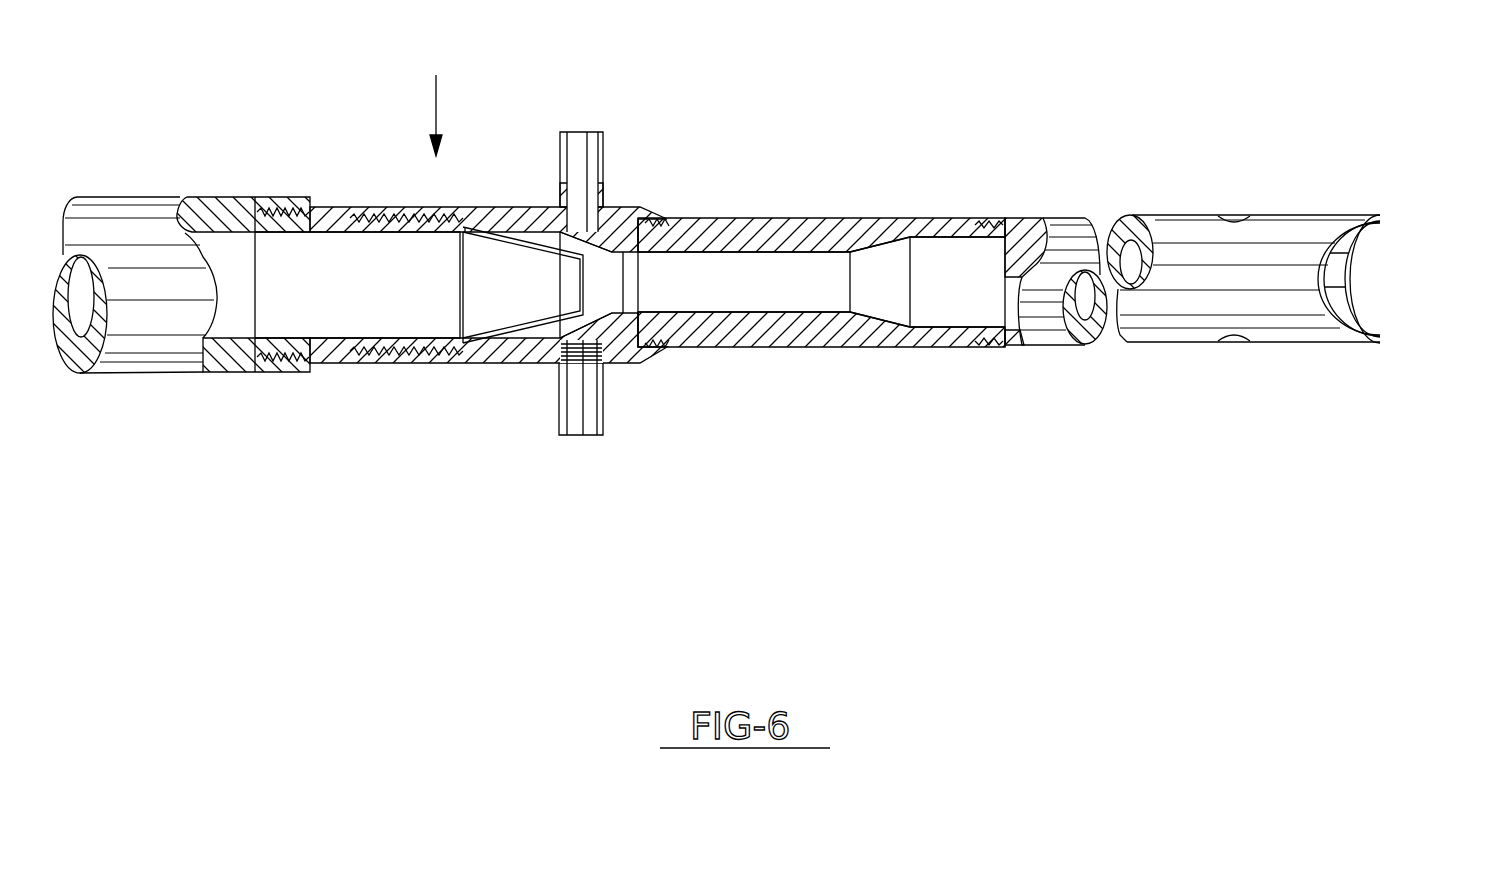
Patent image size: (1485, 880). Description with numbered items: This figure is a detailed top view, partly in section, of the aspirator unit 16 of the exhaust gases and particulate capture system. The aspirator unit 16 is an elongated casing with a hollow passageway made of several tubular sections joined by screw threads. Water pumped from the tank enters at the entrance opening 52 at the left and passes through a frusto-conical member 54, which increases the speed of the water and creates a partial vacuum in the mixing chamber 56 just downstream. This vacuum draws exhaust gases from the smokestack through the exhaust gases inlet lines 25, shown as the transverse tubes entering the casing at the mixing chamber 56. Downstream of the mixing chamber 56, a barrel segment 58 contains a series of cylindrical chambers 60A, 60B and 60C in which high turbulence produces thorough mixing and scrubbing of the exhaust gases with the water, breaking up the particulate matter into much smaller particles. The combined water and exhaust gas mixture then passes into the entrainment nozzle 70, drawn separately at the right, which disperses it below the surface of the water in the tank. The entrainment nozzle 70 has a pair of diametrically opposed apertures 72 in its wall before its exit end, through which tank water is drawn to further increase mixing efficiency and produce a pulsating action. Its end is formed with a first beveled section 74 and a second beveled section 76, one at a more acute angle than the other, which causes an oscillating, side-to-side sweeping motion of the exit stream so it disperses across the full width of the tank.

The aspirator unit 16 is at (419, 115).
The exhaust gases inlet lines 25 is at (590, 148).
The entrance opening 52 is at (375, 296).
The frusto-conical member 54 is at (545, 252).
The mixing chamber 56 is at (618, 293).
The barrel segment 58 is at (808, 227).
The cylindrical chamber 60A is at (760, 293).
The cylindrical chamber 60B is at (903, 293).
The cylindrical chamber 60C is at (985, 293).
The entrainment nozzle 70 is at (1236, 298).
The apertures 72 is at (1236, 221).
The first beveled section 74 is at (1350, 272).
The second beveled section 76 is at (1348, 336).